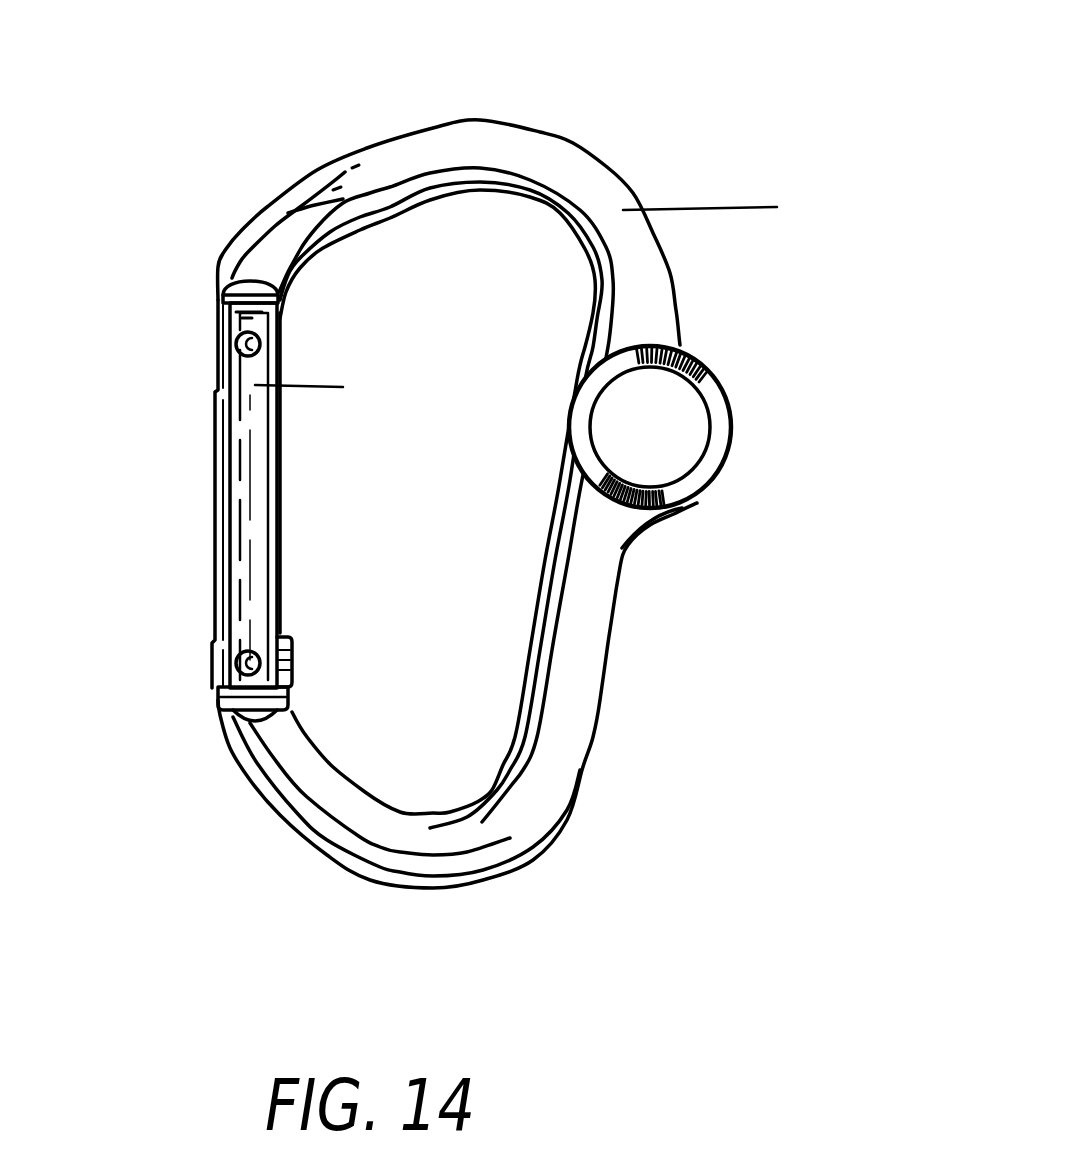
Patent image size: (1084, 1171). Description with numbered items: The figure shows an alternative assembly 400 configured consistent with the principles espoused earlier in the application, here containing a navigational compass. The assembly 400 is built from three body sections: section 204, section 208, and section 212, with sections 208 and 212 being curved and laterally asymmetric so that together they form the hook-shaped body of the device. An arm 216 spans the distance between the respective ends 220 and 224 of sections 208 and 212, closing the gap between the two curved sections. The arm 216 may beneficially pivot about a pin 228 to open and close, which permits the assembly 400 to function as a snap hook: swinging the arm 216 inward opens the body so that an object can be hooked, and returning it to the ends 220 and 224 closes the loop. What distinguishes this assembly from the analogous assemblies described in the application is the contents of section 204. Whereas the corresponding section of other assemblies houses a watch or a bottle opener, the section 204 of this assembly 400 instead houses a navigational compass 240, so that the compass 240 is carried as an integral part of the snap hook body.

The assembly 400 is at (757, 129).
The section 204 is at (851, 272).
The section 208 is at (565, 162).
The section 212 is at (373, 860).
The arm 216 is at (223, 438).
The end 220 is at (227, 274).
The end 224 is at (220, 653).
The pin 228 is at (218, 685).
The navigational compass 240 is at (713, 467).